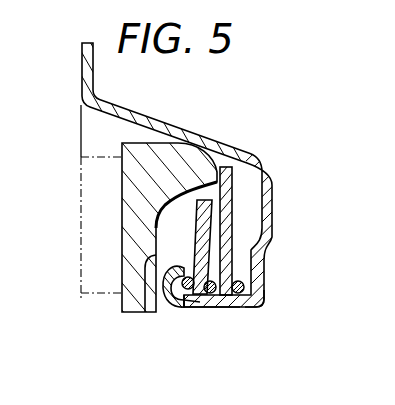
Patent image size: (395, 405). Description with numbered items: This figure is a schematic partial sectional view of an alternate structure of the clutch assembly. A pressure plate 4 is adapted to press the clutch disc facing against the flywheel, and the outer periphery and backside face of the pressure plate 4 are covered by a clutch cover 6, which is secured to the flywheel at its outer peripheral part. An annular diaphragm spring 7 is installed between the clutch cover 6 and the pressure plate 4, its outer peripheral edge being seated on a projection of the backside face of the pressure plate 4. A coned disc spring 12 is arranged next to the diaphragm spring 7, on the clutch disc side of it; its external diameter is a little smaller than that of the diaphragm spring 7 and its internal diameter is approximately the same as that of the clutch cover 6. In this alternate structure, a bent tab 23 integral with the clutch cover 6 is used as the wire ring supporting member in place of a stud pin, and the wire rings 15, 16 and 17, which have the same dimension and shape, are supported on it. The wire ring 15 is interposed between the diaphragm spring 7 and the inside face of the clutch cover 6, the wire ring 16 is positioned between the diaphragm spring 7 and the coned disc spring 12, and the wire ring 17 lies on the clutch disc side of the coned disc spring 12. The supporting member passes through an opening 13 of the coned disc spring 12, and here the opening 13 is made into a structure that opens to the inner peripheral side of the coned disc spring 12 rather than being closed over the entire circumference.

The pressure plate 4 is at (173, 157).
The clutch cover 6 is at (267, 173).
The diaphragm spring 7 is at (250, 211).
The coned disc spring 12 is at (222, 259).
The opening 13 is at (203, 305).
The wire ring 15 is at (257, 300).
The wire ring 16 is at (208, 307).
The wire ring 17 is at (186, 301).
The bent tab 23 is at (168, 303).